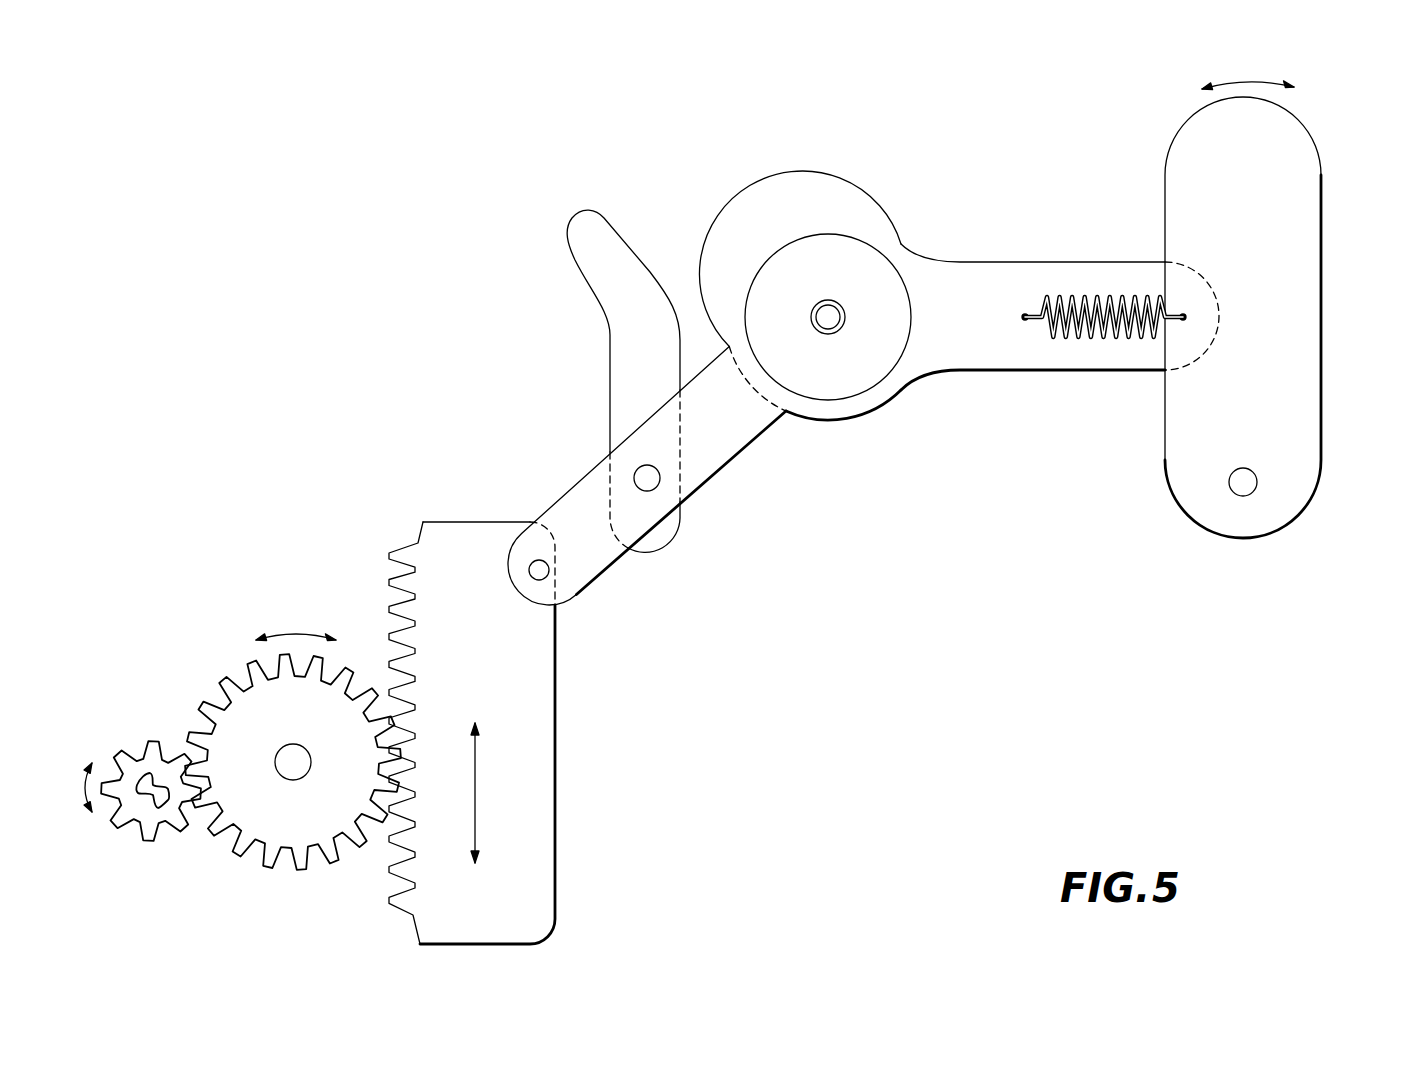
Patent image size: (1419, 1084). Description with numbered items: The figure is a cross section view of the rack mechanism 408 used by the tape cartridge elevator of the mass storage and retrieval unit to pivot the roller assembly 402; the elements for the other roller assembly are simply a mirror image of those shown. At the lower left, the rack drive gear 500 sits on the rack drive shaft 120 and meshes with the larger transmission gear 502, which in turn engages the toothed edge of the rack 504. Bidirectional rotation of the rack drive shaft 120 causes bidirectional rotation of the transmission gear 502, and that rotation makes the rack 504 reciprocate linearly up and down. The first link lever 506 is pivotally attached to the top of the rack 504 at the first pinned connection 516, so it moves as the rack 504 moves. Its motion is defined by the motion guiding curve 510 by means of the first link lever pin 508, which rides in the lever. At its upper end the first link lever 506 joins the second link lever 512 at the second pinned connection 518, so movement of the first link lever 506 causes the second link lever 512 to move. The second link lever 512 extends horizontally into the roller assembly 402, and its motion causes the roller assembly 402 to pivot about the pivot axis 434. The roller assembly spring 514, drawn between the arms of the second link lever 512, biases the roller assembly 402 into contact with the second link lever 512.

The rack drive shaft 120 is at (137, 823).
The roller assembly 402 is at (1285, 317).
The rack mechanism 408 is at (860, 645).
The pivot axis 434 is at (1243, 496).
The rack drive gear 500 is at (128, 753).
The transmission gear 502 is at (287, 820).
The rack 504 is at (448, 533).
The first link lever 506 is at (565, 508).
The first link lever pin 508 is at (650, 490).
The motion guiding curve 510 is at (590, 222).
The second link lever 512 is at (968, 345).
The roller assembly spring 514 is at (1077, 300).
The first pinned connection 516 is at (560, 606).
The second pinned connection 518 is at (832, 333).